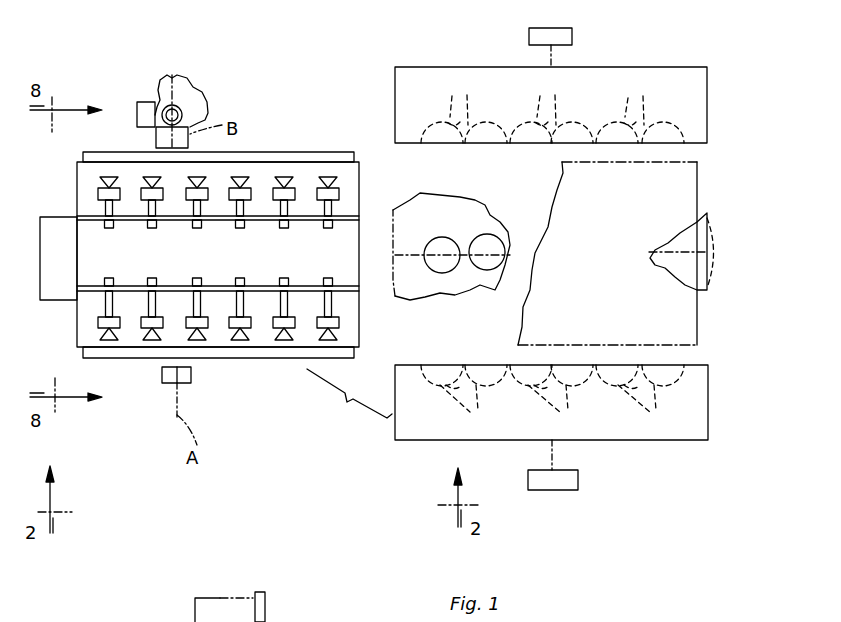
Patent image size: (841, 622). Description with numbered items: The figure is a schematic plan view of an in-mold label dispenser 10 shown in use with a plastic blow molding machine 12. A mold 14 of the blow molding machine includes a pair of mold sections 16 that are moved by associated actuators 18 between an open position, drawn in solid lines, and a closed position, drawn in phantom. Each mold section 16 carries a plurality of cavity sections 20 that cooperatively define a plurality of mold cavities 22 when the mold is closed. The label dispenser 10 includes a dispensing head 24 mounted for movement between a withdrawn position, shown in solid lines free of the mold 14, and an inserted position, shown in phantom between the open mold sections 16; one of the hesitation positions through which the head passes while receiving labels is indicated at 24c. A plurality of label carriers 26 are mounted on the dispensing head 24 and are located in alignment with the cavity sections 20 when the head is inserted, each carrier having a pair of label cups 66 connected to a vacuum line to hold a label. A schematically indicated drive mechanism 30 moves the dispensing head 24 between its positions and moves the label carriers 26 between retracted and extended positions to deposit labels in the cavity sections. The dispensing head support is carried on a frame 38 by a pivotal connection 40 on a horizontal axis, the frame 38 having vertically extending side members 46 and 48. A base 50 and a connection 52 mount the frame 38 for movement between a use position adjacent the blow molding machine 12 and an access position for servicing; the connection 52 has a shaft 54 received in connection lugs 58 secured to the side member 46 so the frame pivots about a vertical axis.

The in-mold label dispenser 10 is at (272, 126).
The plastic blow molding machine 12 is at (452, 54).
The mold 14 is at (693, 65).
The mold sections 16 is at (630, 70).
The actuators 18 is at (573, 33).
The cavity sections 20 is at (554, 255).
The mold cavities 22 is at (443, 245).
The dispensing head 24 is at (249, 350).
The dispensing head position 24c is at (220, 596).
The label carriers 26 is at (113, 204).
The drive mechanism 30 is at (56, 210).
The frame 38 is at (191, 390).
The pivotal connection 40 is at (171, 390).
The side member 46 is at (157, 140).
The side member 48 is at (192, 377).
The base 50 is at (165, 95).
The connection 52 is at (186, 99).
The shaft 54 is at (178, 106).
The connection lugs 58 is at (158, 103).
The label cups 66 is at (192, 177).